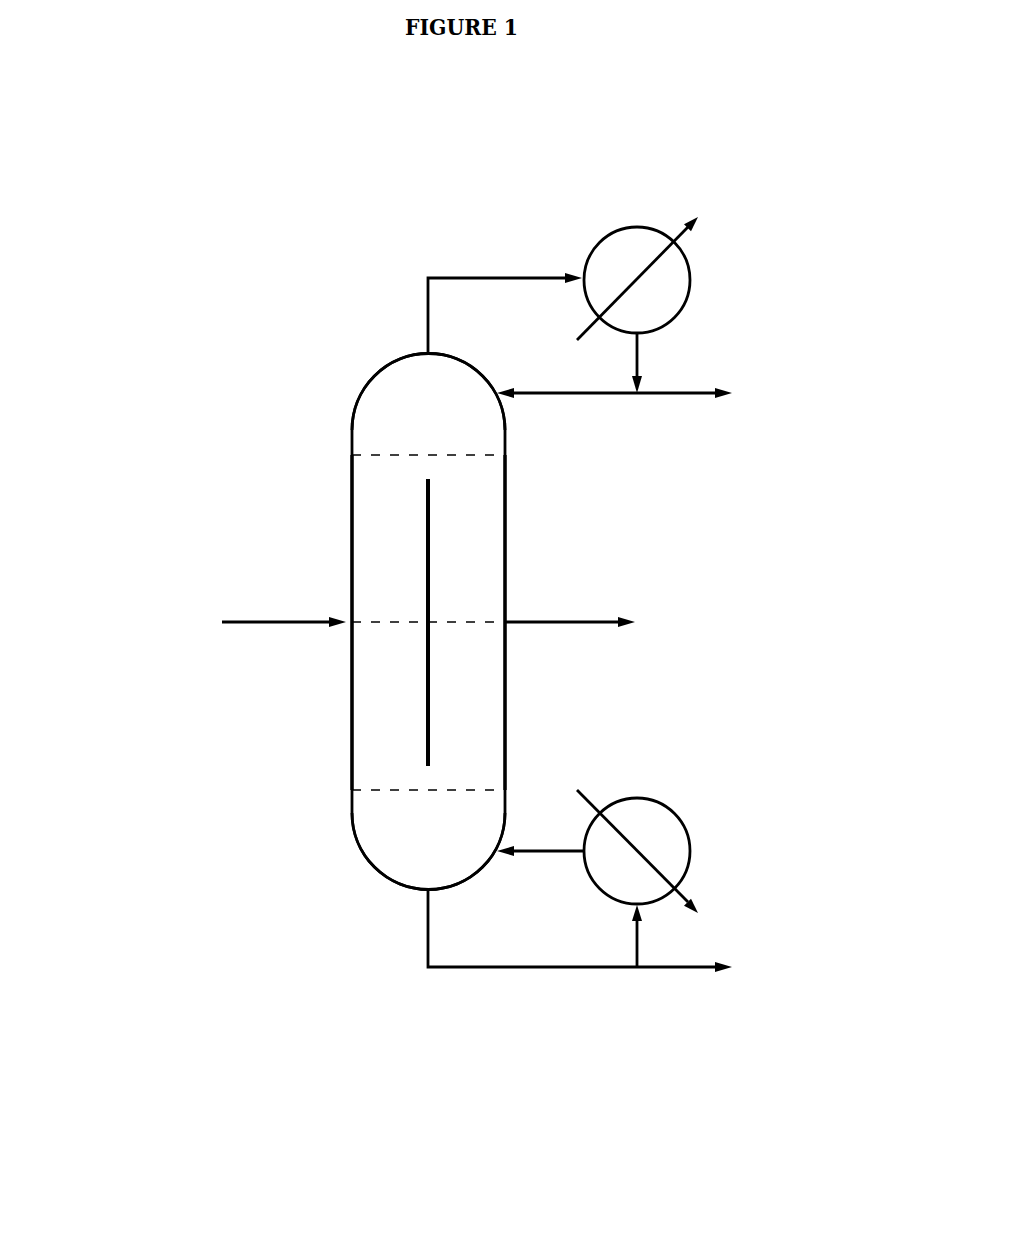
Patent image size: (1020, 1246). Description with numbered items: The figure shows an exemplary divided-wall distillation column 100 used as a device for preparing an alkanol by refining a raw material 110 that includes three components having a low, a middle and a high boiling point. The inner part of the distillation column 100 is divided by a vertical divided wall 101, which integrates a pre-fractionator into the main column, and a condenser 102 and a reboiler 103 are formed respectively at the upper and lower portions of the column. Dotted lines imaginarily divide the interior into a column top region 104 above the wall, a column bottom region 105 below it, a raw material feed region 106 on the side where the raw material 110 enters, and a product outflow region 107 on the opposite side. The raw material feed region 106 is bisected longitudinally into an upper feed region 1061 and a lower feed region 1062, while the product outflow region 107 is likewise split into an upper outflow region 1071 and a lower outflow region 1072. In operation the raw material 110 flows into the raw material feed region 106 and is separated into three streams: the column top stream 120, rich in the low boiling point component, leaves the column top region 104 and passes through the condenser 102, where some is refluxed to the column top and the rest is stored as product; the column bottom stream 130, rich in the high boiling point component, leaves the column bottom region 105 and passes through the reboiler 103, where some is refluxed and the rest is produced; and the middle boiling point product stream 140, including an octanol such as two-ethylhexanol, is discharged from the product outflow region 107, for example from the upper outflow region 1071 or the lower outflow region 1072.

The divided-wall distillation column 100 is at (348, 344).
The divided wall 101 is at (430, 522).
The condenser 102 is at (693, 272).
The reboiler 103 is at (692, 830).
The column top region 104 is at (378, 403).
The column bottom region 105 is at (390, 857).
The raw material feed region 106 is at (155, 670).
The upper feed region 1061 is at (378, 590).
The lower feed region 1062 is at (375, 718).
The product outflow region 107 is at (703, 670).
The upper outflow region 1071 is at (480, 590).
The lower outflow region 1072 is at (485, 717).
The raw material 110 is at (260, 618).
The column top stream 120 is at (494, 276).
The column bottom stream 130 is at (533, 968).
The product stream 140 is at (592, 617).